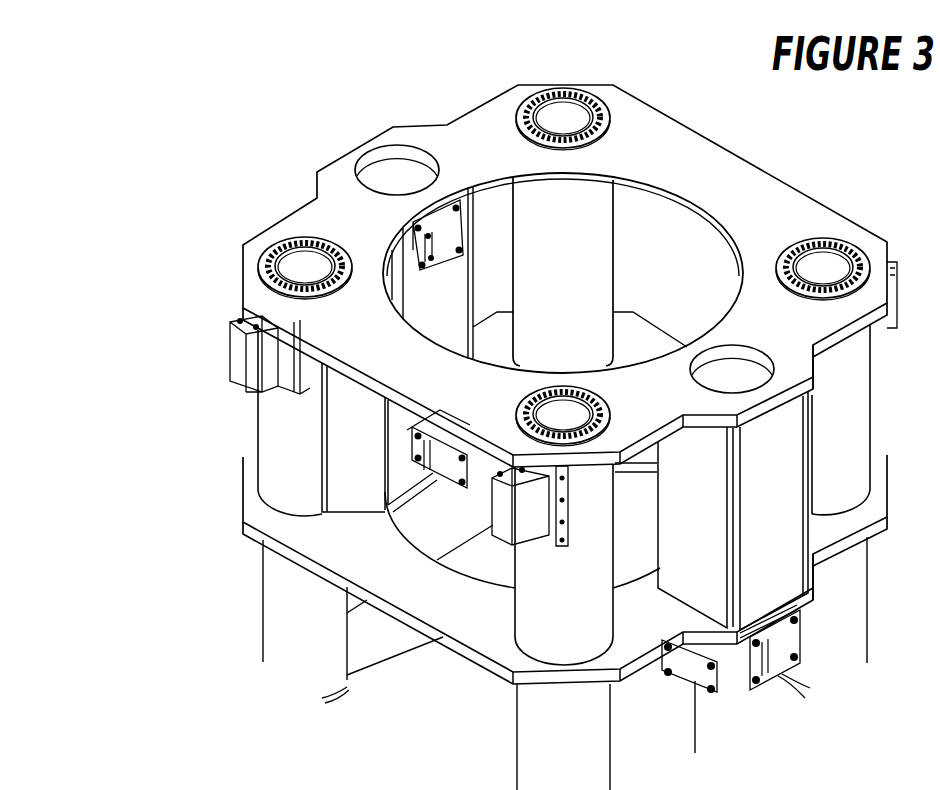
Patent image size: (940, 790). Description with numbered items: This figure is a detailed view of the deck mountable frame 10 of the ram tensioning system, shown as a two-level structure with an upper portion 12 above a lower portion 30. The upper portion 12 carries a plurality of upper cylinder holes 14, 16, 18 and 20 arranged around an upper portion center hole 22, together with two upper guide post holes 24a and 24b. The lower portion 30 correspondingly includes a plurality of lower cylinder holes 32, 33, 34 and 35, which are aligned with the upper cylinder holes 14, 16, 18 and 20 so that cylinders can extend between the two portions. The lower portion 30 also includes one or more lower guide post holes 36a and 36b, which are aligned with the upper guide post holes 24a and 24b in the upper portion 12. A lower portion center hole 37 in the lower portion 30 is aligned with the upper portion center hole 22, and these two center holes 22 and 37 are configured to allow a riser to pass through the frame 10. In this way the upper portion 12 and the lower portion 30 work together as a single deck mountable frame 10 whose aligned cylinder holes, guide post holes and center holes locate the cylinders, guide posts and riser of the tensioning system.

The deck mountable frame 10 is at (158, 224).
The upper portion 12 is at (750, 188).
The upper cylinder hole 14 is at (551, 112).
The upper cylinder hole 16 is at (299, 272).
The upper cylinder hole 18 is at (578, 417).
The upper cylinder hole 20 is at (833, 268).
The upper portion center hole 22 is at (612, 182).
The upper guide post hole 24a is at (394, 164).
The upper guide post hole 24b is at (742, 353).
The lower portion 30 is at (460, 636).
The lower cylinder hole 32 is at (267, 497).
The lower cylinder hole 33 is at (609, 650).
The lower cylinder hole 34 is at (863, 497).
The lower cylinder hole 35 is at (606, 352).
The lower guide post hole 36a is at (410, 430).
The lower guide post hole 36b is at (783, 612).
The lower portion center hole 37 is at (415, 527).